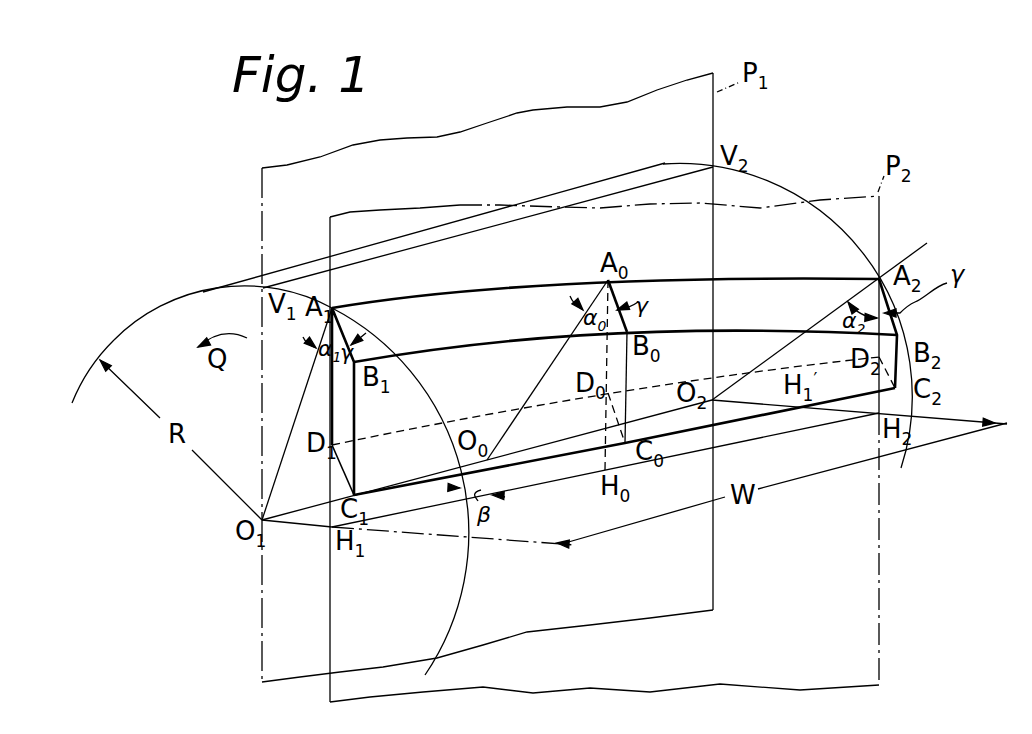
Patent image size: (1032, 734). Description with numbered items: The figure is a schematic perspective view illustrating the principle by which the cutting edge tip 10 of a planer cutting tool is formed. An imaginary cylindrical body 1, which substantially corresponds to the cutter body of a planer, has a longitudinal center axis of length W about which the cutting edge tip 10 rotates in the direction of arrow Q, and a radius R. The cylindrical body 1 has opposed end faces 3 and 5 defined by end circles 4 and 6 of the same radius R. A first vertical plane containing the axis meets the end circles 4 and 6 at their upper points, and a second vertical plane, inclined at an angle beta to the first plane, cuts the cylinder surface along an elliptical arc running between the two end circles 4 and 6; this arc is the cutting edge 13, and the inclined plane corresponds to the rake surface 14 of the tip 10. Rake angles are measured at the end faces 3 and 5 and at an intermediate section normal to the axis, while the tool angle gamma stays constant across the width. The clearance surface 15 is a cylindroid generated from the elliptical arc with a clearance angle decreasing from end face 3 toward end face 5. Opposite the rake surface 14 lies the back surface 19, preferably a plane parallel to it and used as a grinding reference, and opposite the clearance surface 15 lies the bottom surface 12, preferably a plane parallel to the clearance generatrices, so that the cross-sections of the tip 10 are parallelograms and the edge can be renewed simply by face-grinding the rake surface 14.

The imaginary cylindrical body 1 is at (533, 200).
The end face 3 is at (147, 322).
The end circle 4 is at (90, 377).
The end face 5 is at (898, 335).
The end circle 6 is at (863, 248).
The cutting edge tip 10 is at (775, 288).
The bottom surface 12 is at (445, 468).
The cutting edge (elliptical arc) 13 is at (655, 265).
The rake surface 14 is at (548, 297).
The clearance surface 15 is at (443, 295).
The back surface 19 is at (410, 478).